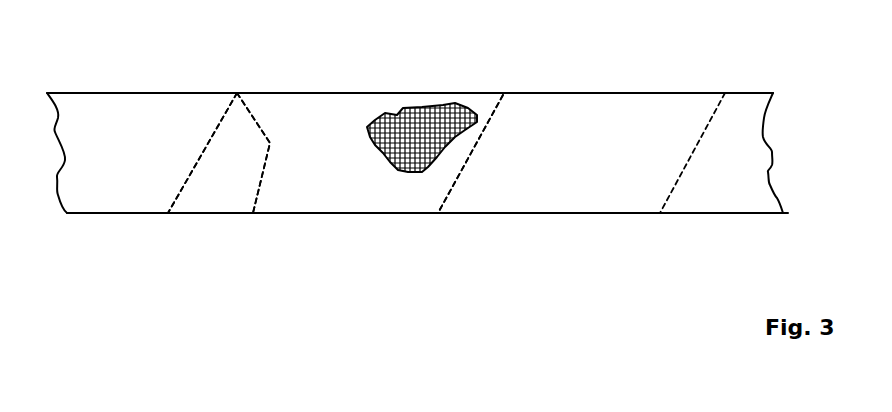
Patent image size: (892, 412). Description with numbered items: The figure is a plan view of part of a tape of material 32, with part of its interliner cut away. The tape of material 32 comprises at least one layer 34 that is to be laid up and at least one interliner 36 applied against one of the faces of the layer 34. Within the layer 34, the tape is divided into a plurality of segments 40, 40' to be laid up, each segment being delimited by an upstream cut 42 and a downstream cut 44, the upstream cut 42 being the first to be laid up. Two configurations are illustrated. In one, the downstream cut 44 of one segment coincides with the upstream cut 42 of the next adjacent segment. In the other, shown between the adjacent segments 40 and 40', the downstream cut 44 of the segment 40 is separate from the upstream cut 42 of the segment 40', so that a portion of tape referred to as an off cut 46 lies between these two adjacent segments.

The tape of material 32 is at (469, 76).
The layer 34 is at (417, 110).
The interliner 36 is at (307, 105).
The segment 40 is at (417, 124).
The segment 40' is at (327, 235).
The upstream cut 42 is at (256, 198).
The downstream cut 44 is at (180, 192).
The off cut 46 is at (233, 140).